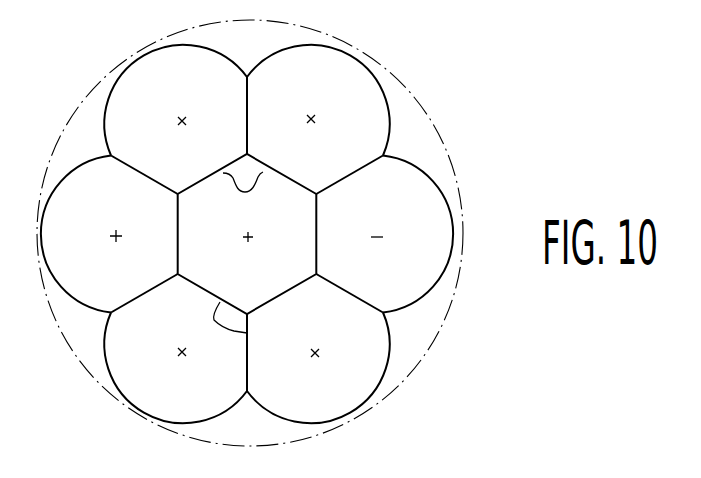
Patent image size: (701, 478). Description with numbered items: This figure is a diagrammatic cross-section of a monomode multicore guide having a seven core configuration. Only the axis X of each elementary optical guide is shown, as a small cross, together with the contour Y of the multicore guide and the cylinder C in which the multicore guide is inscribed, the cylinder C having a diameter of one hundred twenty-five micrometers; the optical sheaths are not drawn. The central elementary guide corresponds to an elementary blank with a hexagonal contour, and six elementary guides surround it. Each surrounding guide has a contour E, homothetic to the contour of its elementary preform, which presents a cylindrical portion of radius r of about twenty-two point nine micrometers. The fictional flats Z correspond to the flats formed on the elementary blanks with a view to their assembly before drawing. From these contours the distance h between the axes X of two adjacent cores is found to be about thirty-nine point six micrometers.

The cylinder C is at (110, 394).
The contour E is at (390, 97).
The contour of the multicore guide Y is at (219, 419).
The fictional flat Z is at (203, 320).
The axis X is at (311, 118).
The radius r is at (487, 212).
The distance between axes of adjacent elementary guide cores h is at (352, 370).